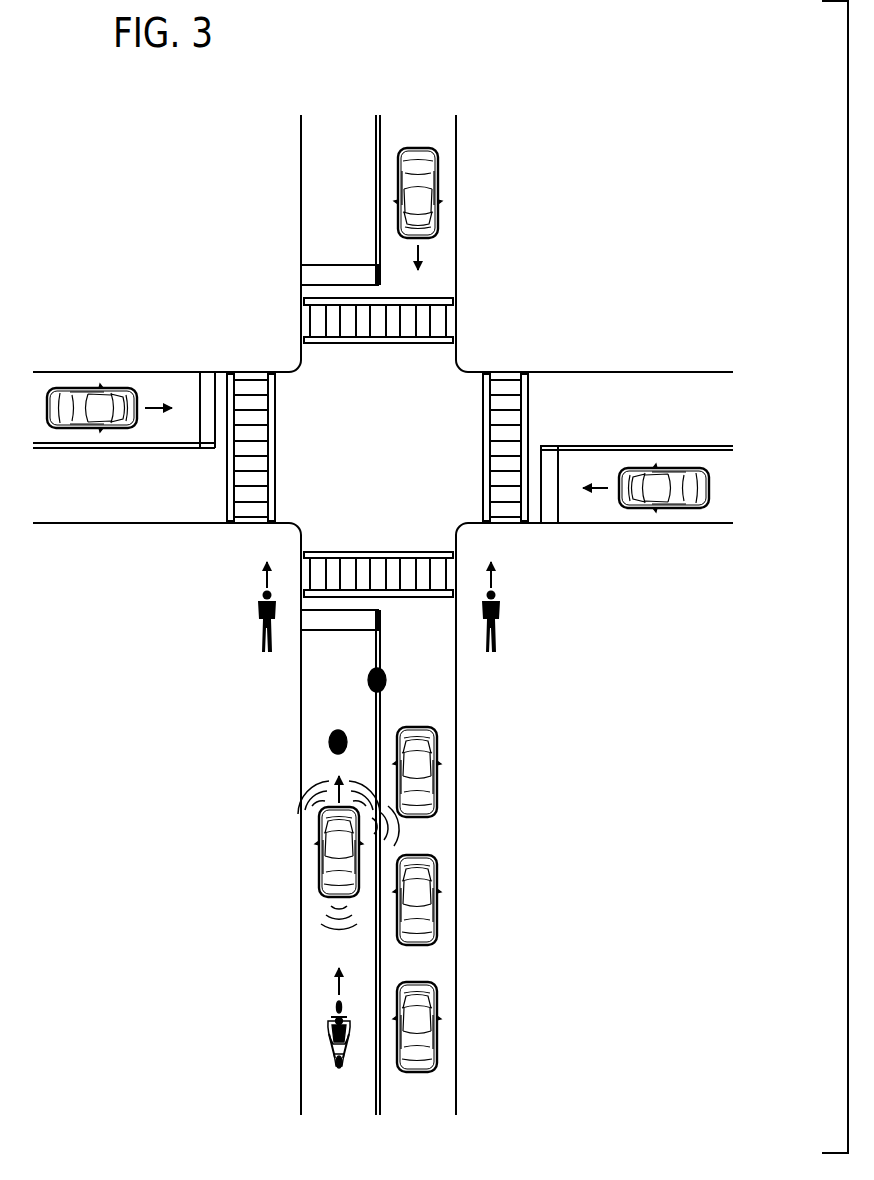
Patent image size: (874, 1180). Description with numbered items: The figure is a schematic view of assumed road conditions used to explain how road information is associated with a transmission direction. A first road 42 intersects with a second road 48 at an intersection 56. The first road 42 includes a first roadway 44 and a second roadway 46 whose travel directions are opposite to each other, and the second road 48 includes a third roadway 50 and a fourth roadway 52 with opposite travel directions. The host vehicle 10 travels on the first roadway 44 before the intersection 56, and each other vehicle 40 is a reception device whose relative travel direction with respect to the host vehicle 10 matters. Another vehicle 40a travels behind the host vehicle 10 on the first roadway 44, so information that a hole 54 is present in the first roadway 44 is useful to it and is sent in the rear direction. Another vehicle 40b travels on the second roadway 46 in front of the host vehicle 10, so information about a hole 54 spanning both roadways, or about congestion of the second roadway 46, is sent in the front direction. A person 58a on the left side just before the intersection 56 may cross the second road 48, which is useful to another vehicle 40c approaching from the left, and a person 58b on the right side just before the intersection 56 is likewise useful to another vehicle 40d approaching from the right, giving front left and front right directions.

The host vehicle 10 is at (318, 857).
The other vehicle 40 is at (437, 768).
The other vehicle 40a is at (327, 1027).
The other vehicle 40b is at (440, 187).
The other vehicle 40c is at (77, 390).
The other vehicle 40d is at (667, 505).
The first road 42 is at (430, 72).
The first roadway 44 is at (347, 128).
The second roadway 46 is at (409, 128).
The second road 48 is at (786, 396).
The third roadway 50 is at (713, 416).
The fourth roadway 52 is at (713, 471).
The hole 54 is at (385, 673).
The intersection 56 is at (469, 355).
The person 58a is at (253, 613).
The person 58b is at (500, 612).